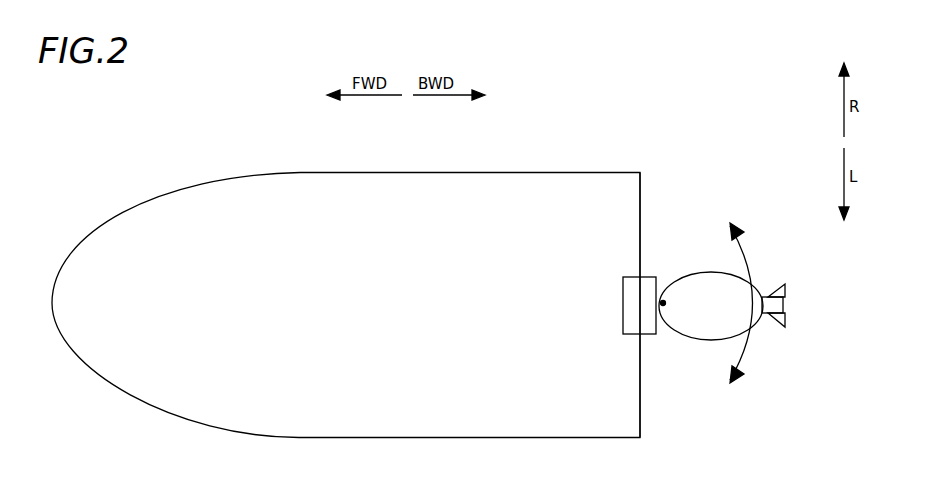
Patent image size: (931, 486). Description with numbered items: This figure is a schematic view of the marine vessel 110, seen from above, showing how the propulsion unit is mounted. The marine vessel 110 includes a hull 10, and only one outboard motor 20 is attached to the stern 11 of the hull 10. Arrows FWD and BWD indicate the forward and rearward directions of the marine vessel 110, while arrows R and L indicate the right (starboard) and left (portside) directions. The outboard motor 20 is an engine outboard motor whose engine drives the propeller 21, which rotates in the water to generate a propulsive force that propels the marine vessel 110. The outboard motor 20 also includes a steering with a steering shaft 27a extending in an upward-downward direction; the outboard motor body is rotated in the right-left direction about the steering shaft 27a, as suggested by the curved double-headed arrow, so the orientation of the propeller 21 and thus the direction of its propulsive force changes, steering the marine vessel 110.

The marine vessel 110 is at (107, 138).
The hull 10 is at (208, 153).
The stern 11 is at (626, 175).
The outboard motor 20 is at (702, 250).
The propeller 21 is at (773, 274).
The steering shaft 27a is at (652, 290).